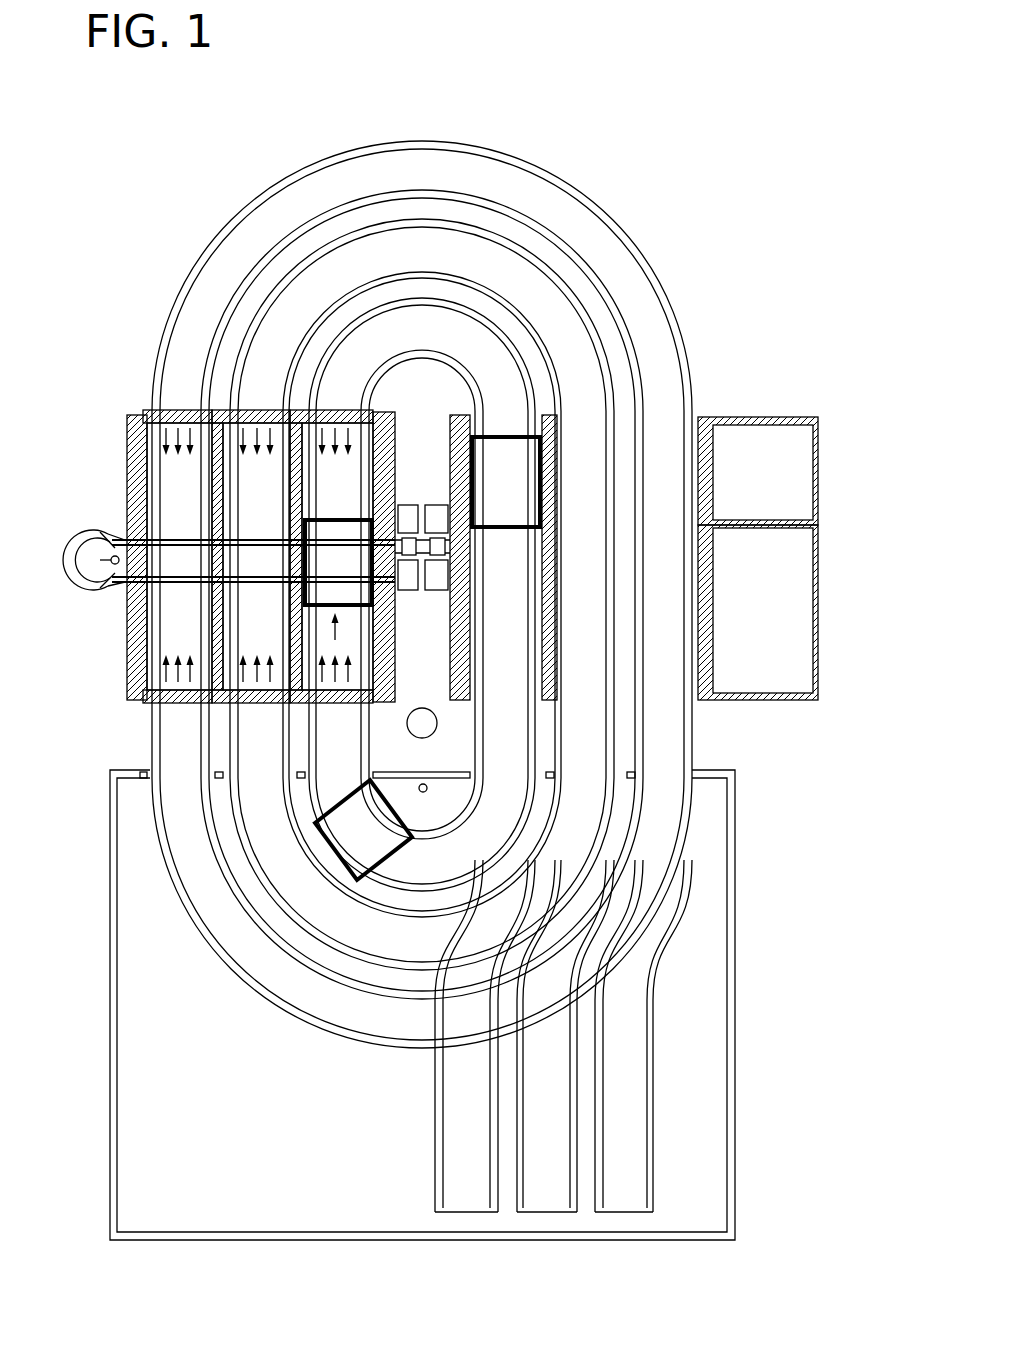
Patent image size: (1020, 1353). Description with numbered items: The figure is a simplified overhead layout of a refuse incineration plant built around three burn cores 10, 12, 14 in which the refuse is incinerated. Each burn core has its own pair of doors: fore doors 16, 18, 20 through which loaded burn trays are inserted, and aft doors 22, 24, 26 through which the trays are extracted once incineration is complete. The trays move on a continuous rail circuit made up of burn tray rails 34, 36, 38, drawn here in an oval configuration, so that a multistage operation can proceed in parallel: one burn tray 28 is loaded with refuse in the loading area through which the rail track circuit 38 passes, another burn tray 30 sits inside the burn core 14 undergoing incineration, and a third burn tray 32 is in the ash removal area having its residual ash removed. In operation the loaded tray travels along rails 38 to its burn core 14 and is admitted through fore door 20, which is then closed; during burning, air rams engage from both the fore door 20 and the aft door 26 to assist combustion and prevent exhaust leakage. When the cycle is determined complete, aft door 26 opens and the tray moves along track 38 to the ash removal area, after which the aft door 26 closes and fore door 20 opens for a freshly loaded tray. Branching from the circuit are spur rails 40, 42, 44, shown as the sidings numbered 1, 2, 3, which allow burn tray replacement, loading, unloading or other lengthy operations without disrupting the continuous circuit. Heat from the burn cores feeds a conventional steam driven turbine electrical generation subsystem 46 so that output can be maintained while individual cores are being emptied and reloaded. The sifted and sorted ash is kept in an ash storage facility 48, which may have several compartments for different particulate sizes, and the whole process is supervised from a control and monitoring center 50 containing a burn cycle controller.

The rail siding 1 is at (643, 1036).
The rail siding 2 is at (565, 1036).
The rail siding 3 is at (485, 1036).
The burn core 10 is at (200, 498).
The burn core 12 is at (275, 498).
The burn core 14 is at (353, 498).
The fore door 16 is at (172, 718).
The fore door 18 is at (262, 703).
The fore door 20 is at (335, 703).
The aft door 22 is at (147, 408).
The aft door 24 is at (262, 413).
The aft door 26 is at (343, 413).
The burn tray 28 is at (388, 863).
The burn tray 30 is at (403, 490).
The burn tray 32 is at (505, 417).
The burn tray rail 34 is at (357, 136).
The burn tray rail 36 is at (418, 205).
The burn tray rail 38 is at (466, 296).
The spur rail 40 is at (695, 1036).
The spur rail 42 is at (656, 1036).
The spur rail 44 is at (615, 1036).
The steam driven turbine electrical generation subsystem 46 is at (432, 484).
The ash storage facility 48 is at (818, 477).
The control and monitoring center 50 is at (818, 573).